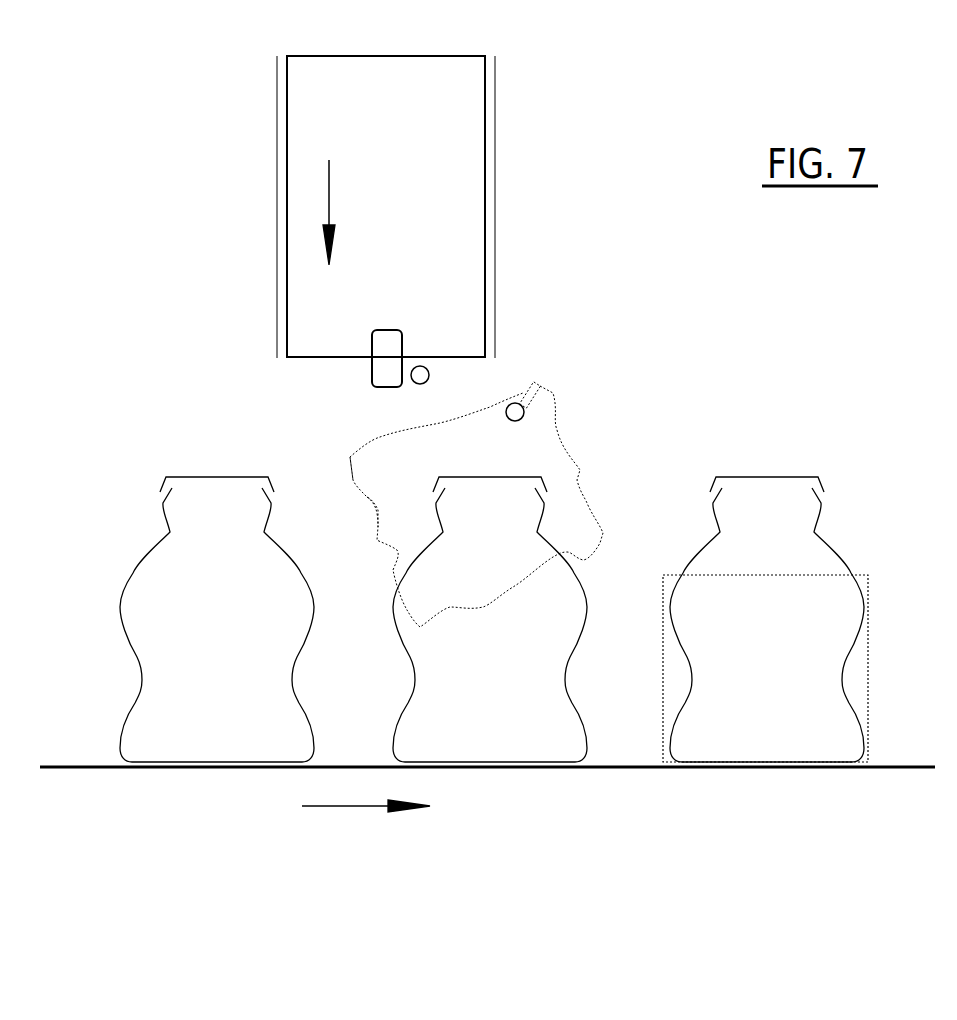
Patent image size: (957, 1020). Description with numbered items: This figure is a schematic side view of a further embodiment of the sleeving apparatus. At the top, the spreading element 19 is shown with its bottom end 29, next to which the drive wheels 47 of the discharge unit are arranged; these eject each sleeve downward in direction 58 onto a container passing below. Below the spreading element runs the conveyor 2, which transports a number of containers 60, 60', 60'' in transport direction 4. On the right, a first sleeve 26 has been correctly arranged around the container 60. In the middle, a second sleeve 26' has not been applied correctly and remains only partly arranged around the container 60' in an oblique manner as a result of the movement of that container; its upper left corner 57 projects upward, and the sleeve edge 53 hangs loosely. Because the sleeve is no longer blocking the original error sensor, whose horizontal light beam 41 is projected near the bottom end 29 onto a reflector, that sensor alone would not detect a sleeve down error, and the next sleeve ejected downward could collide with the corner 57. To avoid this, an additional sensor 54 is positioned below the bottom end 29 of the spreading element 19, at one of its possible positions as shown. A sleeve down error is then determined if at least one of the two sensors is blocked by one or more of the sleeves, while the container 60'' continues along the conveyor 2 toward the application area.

The conveyor 2 is at (631, 769).
The transport direction 4 is at (330, 806).
The spreading element 19 is at (462, 187).
The first sleeve 26 is at (800, 668).
The second sleeve 26' is at (513, 506).
The bottom end of the spreading element 29 is at (343, 357).
The horizontal light beam 41 is at (423, 366).
The drive wheels 47 is at (372, 372).
The label section 53 is at (380, 513).
The additional sensor 54 is at (542, 384).
The upper left corner of the sleeve 57 is at (350, 460).
The ejection direction 58 is at (342, 212).
The container 60 is at (778, 619).
The container 60' is at (535, 585).
The container 60'' is at (217, 409).